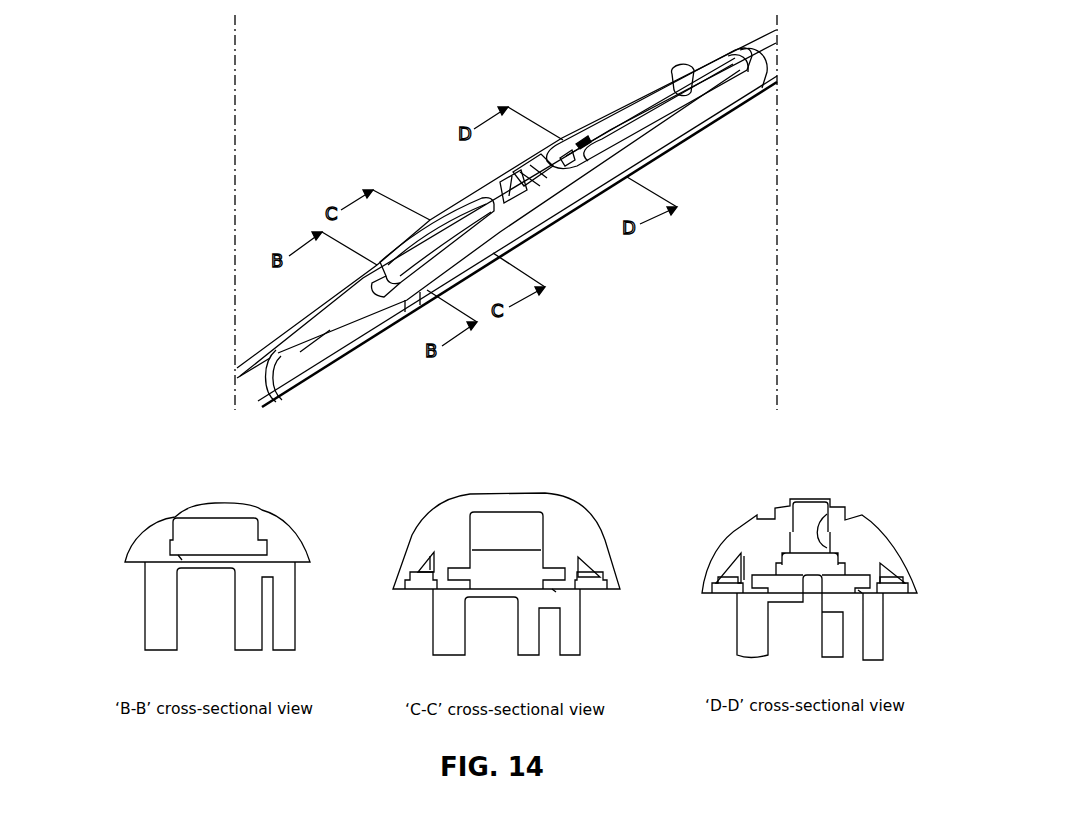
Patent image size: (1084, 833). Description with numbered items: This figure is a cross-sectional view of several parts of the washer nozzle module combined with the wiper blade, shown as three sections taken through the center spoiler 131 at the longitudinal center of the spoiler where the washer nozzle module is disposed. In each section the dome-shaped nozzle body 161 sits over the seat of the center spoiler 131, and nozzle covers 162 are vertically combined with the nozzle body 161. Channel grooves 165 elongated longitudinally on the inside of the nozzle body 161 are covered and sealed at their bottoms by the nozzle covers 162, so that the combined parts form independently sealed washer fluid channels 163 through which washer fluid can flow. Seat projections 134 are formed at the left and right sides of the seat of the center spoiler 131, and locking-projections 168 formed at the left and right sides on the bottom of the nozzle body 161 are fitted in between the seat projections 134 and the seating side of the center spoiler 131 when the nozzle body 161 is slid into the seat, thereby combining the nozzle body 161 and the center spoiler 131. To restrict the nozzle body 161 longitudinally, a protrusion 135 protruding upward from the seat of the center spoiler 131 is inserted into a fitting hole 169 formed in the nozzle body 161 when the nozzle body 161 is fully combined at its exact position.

The center spoiler 131 is at (150, 608).
The seat projections 134 is at (172, 550).
The protrusion 135 is at (804, 500).
The nozzle body 161 is at (150, 533).
The nozzle covers 162 is at (420, 580).
The washer fluid channel 163 is at (424, 562).
The channel grooves 165 is at (558, 529).
The locking-projections 168 is at (178, 555).
The fitting hole 169 is at (822, 534).